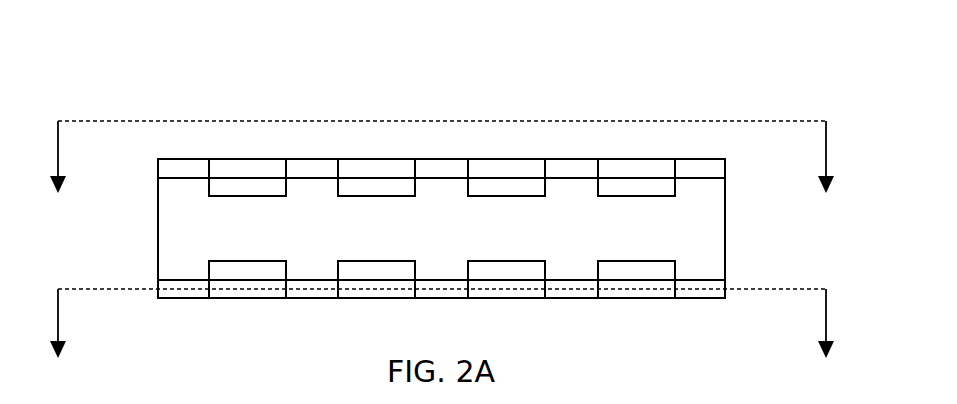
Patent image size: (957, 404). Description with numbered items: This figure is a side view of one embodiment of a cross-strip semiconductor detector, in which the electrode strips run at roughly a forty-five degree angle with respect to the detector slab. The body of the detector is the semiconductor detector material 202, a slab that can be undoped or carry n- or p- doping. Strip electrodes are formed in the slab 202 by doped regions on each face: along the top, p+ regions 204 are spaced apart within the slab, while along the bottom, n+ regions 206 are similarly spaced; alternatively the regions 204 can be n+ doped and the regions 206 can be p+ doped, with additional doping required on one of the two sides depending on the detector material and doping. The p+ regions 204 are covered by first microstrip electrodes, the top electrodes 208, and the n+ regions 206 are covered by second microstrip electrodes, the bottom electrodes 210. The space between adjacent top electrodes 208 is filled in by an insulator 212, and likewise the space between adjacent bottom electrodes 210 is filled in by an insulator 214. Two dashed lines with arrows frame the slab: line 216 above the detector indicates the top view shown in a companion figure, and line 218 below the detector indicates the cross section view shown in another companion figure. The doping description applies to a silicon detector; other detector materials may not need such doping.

The semiconductor detector material 202 is at (463, 243).
The p+ regions 204 is at (639, 185).
The n+ regions 206 is at (245, 270).
The top electrodes 208 is at (508, 166).
The bottom electrodes 210 is at (638, 292).
The insulator 212 is at (312, 166).
The insulator 214 is at (570, 292).
The line 216 is at (123, 121).
The line 218 is at (108, 289).